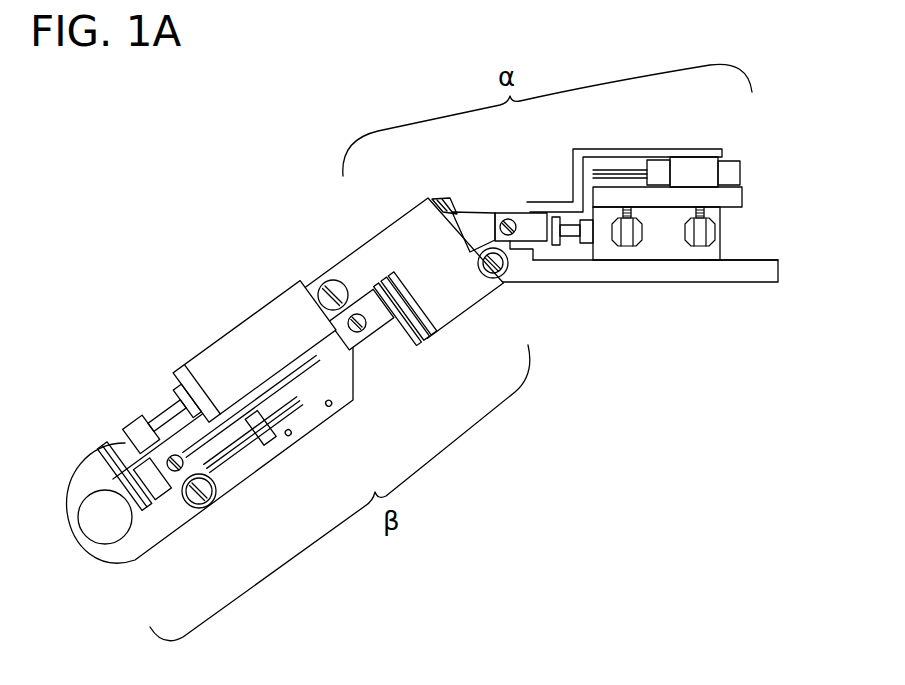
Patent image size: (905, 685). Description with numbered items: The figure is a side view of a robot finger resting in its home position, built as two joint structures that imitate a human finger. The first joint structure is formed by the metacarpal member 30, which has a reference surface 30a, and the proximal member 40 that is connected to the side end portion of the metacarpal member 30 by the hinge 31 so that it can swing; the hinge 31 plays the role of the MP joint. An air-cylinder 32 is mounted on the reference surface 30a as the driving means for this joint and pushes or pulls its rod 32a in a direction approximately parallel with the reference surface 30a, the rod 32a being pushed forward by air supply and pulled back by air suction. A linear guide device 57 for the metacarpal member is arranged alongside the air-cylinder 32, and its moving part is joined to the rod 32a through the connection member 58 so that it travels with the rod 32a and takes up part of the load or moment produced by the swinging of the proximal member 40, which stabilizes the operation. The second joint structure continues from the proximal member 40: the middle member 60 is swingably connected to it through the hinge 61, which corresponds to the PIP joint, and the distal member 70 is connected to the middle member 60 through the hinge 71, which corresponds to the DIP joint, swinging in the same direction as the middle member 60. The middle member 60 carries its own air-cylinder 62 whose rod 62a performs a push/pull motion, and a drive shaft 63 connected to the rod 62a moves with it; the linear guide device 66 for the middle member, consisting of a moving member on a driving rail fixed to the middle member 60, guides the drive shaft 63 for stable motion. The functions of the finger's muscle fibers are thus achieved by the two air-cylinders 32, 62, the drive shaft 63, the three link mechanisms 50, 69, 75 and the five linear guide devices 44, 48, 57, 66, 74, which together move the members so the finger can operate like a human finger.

The metacarpal member 30 is at (743, 281).
The reference surface 30a is at (775, 260).
The hinge 31 is at (489, 281).
The air-cylinder 32 is at (660, 250).
The rod 32a is at (570, 243).
The proximal member 40 is at (380, 255).
The linear guide device 44 is at (457, 206).
The linear guide device 48 is at (398, 332).
The link mechanism 50 is at (502, 210).
The linear guide device for the metacarpal member 57 is at (752, 181).
The connection member 58 is at (655, 156).
The middle member 60 is at (356, 402).
The hinge 61 is at (320, 283).
The air-cylinder 62 is at (218, 350).
The rod 62a is at (170, 398).
The drive shaft 63 is at (248, 440).
The linear guide device for the middle member 66 is at (280, 450).
The link mechanism 69 is at (372, 347).
The distal member 70 is at (97, 560).
The hinge 71 is at (210, 507).
The linear guide device 74 is at (158, 510).
The link mechanism 75 is at (162, 455).